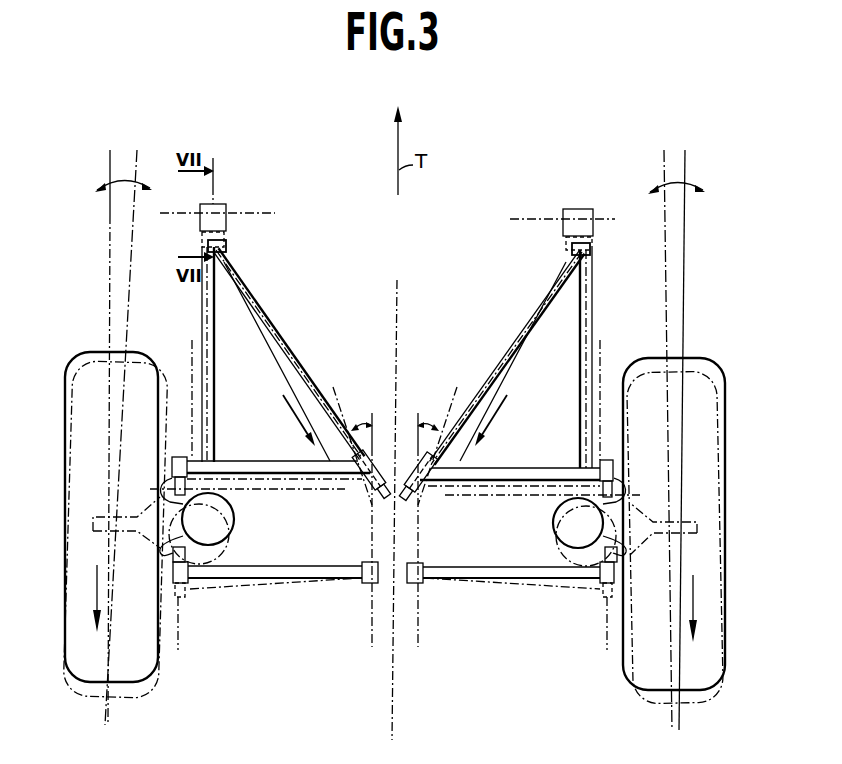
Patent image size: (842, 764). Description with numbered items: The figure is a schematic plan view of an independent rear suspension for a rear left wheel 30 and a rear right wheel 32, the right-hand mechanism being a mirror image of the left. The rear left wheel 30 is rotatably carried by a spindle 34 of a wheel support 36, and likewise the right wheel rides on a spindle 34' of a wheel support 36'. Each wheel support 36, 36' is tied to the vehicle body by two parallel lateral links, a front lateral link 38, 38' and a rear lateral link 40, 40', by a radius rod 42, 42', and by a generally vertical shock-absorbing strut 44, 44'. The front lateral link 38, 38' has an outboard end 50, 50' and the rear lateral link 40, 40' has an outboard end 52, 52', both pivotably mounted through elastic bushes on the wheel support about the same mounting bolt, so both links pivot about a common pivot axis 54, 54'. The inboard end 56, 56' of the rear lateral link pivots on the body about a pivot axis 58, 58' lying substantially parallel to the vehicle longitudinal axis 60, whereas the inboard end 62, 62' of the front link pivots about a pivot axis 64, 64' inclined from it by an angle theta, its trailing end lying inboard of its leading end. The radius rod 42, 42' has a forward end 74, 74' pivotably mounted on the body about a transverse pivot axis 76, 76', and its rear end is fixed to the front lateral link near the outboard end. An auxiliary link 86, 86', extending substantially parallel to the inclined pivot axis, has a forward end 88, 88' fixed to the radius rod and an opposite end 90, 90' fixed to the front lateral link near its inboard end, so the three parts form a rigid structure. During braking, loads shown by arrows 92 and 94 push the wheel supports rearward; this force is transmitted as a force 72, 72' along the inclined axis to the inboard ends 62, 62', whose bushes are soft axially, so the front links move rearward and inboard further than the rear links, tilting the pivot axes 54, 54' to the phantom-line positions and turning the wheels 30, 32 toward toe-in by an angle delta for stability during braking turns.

The rear left wheel 30 is at (138, 690).
The rear right wheel 32 is at (652, 690).
The spindle 34 is at (91, 537).
The spindle 34' is at (704, 535).
The wheel support 36 is at (152, 531).
The wheel support 36' is at (638, 531).
The front lateral link 38 is at (260, 458).
The front lateral link 38' is at (530, 460).
The rear lateral link 40 is at (275, 560).
The rear lateral link 40' is at (511, 596).
The radius rod 42 is at (182, 354).
The radius rod 42' is at (613, 359).
The strut 44 is at (225, 528).
The strut 44' is at (553, 532).
The outboard end of front lateral link 50 is at (176, 429).
The outboard end of front lateral link 50' is at (575, 444).
The outboard end of rear lateral link 52 is at (202, 596).
The outboard end of rear lateral link 52' is at (587, 593).
The pivot axis 54 is at (205, 636).
The pivot axis 54' is at (580, 635).
The inboard end of rear lateral link 56 is at (351, 594).
The inboard end of rear lateral link 56' is at (437, 593).
The pivot axis 58 is at (356, 574).
The pivot axis 58' is at (452, 547).
The vehicle longitudinal axis 60 is at (403, 352).
The inboard end of front lateral link 62 is at (358, 489).
The inboard end of front lateral link 62' is at (432, 488).
The pivot axis 64 is at (344, 438).
The pivot axis 64' is at (445, 437).
The force arrow 72 is at (277, 361).
The force arrow 72' is at (513, 361).
The forward end of radius rod 74 is at (221, 203).
The forward end of radius rod 74' is at (562, 202).
The pivot axis 76 is at (184, 233).
The pivot axis 76' is at (553, 245).
The auxiliary link 86 is at (289, 353).
The auxiliary link 86' is at (507, 357).
The forward end of auxiliary link 88 is at (243, 245).
The forward end of auxiliary link 88' is at (609, 259).
The opposite end of auxiliary link 90 is at (296, 426).
The opposite end of auxiliary link 90' is at (485, 423).
The braking load arrow 92 is at (97, 587).
The braking load arrow 94 is at (698, 598).